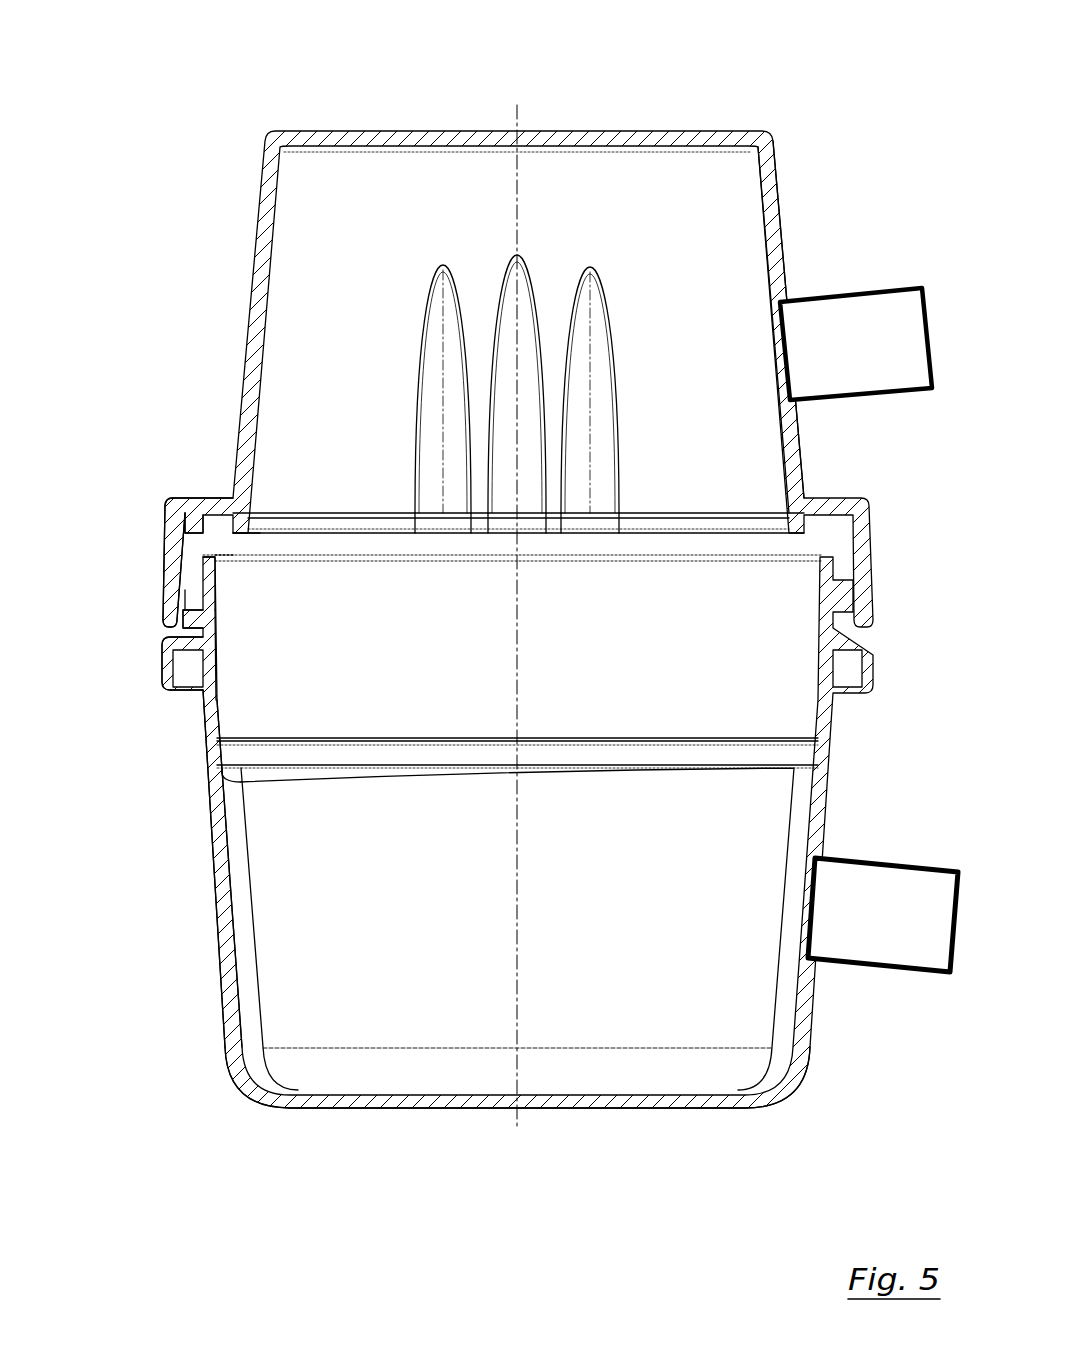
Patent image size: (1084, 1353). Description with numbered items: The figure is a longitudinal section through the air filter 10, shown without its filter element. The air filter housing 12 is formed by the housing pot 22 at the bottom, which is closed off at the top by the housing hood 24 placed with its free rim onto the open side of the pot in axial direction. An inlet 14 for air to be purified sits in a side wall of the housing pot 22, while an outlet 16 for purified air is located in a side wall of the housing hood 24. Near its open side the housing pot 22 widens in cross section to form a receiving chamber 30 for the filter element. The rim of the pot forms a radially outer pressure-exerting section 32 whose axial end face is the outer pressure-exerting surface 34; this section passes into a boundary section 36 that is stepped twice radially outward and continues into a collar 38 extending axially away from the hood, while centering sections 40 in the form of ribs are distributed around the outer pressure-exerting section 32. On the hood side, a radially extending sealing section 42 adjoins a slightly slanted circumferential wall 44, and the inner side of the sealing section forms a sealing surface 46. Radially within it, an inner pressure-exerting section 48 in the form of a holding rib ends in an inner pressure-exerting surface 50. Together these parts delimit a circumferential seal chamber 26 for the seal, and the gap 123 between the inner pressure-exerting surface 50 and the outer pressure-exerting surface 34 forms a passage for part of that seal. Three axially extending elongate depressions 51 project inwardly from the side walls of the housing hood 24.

The air filter 10 is at (181, 68).
The air filter housing 12 is at (240, 204).
The inlet 14 is at (915, 917).
The outlet 16 is at (898, 343).
The housing pot 22 is at (232, 1022).
The housing hood 24 is at (780, 247).
The seal chamber 26 is at (200, 544).
The receiving chamber 30 is at (648, 671).
The radially outer pressure-exerting section 32 is at (215, 588).
The radially outer pressure-exerting surface 34 is at (215, 562).
The boundary section 36 is at (216, 639).
The collar 38 is at (163, 670).
The centering sections 40 is at (186, 606).
The sealing section 42 is at (212, 503).
The circumferential wall 44 is at (186, 598).
The sealing surface 46 is at (200, 534).
The radially inner pressure-exerting section 48 is at (242, 522).
The radially inner pressure-exerting surface 50 is at (248, 537).
The elongate depressions 51 is at (450, 318).
The gap 123 is at (228, 543).